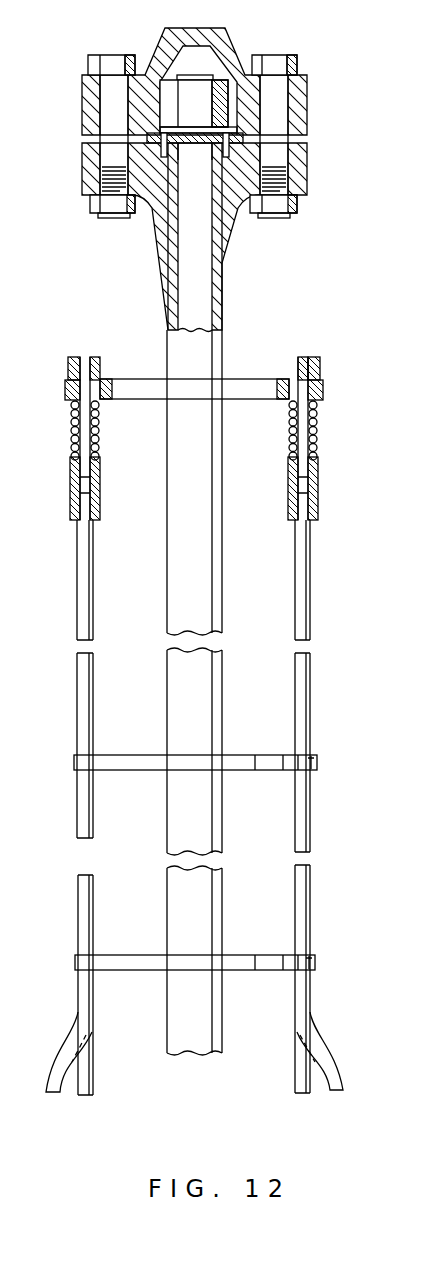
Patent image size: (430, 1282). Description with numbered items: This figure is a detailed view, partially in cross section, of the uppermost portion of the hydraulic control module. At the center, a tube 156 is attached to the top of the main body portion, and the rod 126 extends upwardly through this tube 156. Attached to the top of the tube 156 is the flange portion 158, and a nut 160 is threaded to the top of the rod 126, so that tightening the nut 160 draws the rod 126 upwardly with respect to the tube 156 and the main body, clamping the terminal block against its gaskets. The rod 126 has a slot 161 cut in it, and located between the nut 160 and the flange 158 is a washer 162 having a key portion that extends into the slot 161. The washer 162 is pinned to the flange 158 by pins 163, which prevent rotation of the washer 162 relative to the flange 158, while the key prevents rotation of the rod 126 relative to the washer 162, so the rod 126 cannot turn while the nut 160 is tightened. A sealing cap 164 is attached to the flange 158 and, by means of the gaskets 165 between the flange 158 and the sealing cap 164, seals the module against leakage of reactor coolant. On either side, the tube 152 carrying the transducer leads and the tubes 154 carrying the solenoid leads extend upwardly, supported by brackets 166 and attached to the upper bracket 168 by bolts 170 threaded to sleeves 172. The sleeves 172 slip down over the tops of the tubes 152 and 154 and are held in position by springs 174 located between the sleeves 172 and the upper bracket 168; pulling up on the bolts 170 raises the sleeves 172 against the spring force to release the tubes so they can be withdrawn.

The rod 126 is at (203, 215).
The tube 152 is at (297, 1073).
The tubes 154 is at (337, 1073).
The tube 156 is at (212, 598).
The flange portion 158 is at (300, 173).
The nut 160 is at (220, 78).
The slot 161 is at (180, 160).
The washer 162 is at (173, 125).
The pins 163 is at (150, 130).
The sealing cap 164 is at (298, 113).
The gaskets 165 is at (147, 148).
The brackets 166 is at (317, 760).
The upper bracket 168 is at (262, 390).
The bolts 170 is at (318, 365).
The sleeves 172 is at (318, 490).
The springs 174 is at (320, 425).